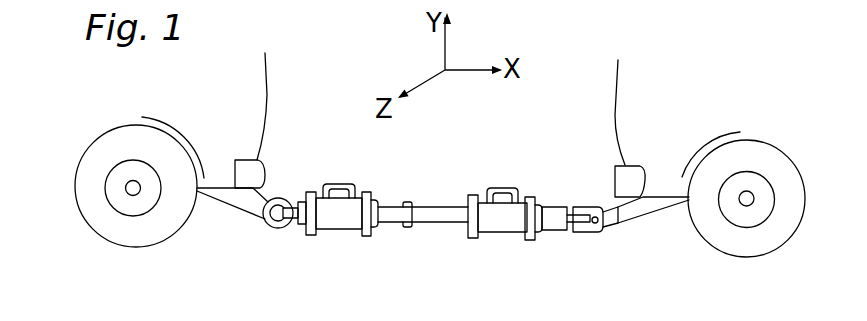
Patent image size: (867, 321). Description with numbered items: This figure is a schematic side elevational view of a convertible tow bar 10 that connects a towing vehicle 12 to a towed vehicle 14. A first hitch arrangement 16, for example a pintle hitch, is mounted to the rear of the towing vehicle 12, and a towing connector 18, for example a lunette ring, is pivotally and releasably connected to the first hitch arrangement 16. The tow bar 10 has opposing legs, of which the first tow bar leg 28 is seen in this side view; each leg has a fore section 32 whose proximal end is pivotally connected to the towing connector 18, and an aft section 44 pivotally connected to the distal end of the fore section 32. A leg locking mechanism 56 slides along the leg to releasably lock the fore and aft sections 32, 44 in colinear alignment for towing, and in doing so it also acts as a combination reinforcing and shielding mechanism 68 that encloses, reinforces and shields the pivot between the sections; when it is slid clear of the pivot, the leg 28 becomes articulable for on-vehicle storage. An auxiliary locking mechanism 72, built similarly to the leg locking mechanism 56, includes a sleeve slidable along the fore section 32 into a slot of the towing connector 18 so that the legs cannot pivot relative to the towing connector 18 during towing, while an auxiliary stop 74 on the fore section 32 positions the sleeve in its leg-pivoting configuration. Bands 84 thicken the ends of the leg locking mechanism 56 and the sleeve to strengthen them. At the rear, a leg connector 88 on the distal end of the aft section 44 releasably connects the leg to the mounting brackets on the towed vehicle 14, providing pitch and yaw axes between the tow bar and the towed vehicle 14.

The convertible tow bar 10 is at (636, 60).
The towing vehicle 12 is at (246, 115).
The towed vehicle 14 is at (653, 123).
The first hitch arrangement 16 is at (247, 204).
The towing connector 18 is at (291, 204).
The first tow bar leg 28 is at (441, 256).
The fore section 32 is at (440, 207).
The aft section 44 is at (557, 207).
The leg locking mechanism 56 is at (501, 233).
The combination reinforcing and shielding mechanism 68 is at (502, 210).
The auxiliary locking mechanism 72 is at (338, 229).
The auxiliary stop 74 is at (379, 201).
The bands 84 is at (309, 237).
The leg connector 88 is at (590, 208).